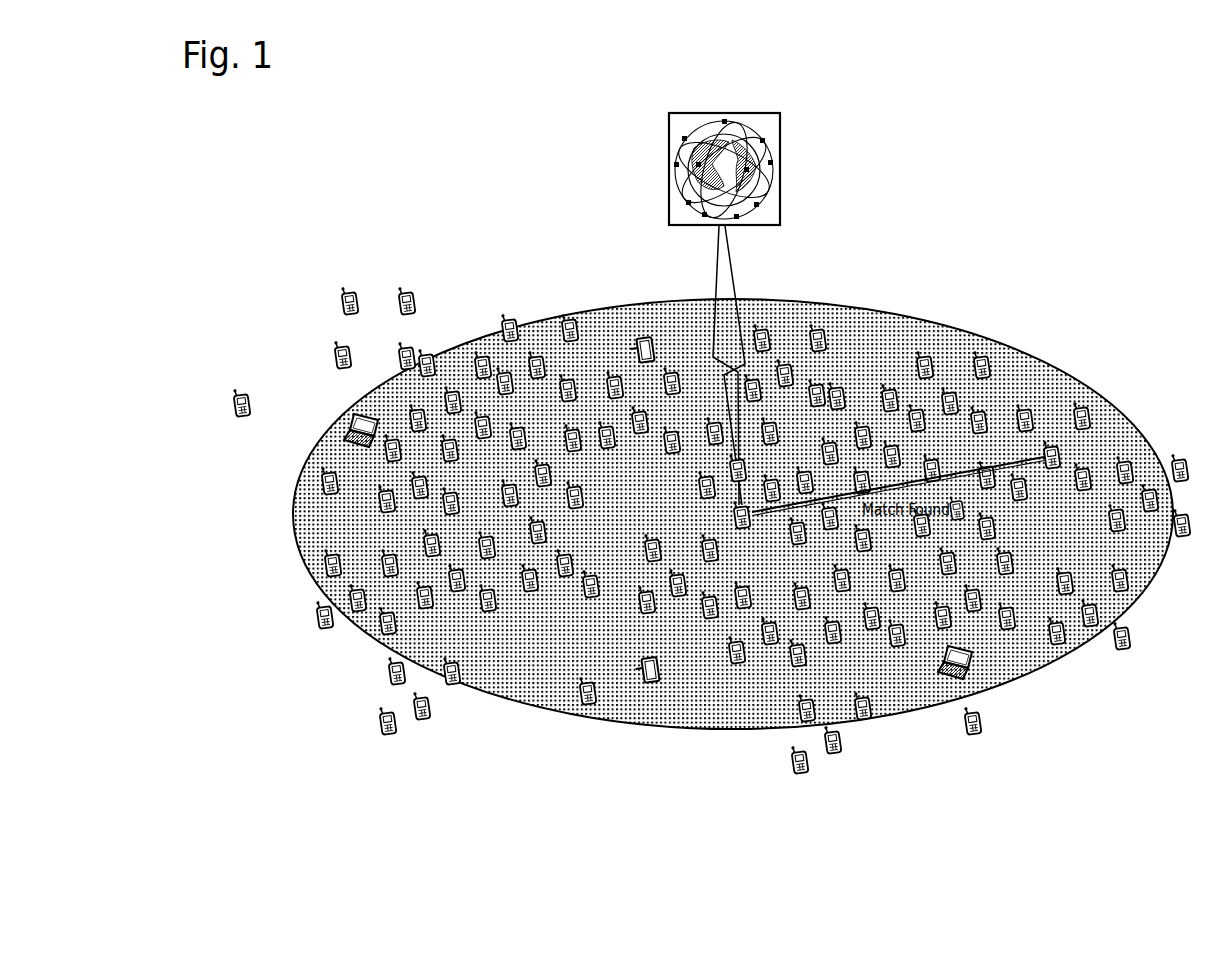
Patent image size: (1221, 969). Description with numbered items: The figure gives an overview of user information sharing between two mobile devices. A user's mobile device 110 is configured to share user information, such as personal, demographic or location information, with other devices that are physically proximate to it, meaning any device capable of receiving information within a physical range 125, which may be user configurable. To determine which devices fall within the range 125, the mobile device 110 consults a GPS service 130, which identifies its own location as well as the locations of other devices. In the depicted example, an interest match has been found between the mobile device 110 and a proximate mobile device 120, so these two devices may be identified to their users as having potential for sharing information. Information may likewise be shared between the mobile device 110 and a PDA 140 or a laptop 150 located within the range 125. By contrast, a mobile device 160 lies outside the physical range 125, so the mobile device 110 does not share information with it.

The mobile device 110 is at (733, 514).
The proximate mobile device 120 is at (1060, 452).
The physical range 125 is at (907, 328).
The GPS service 130 is at (779, 155).
The PDA 140 is at (642, 664).
The laptop 150 is at (940, 667).
The mobile device 160 is at (252, 400).